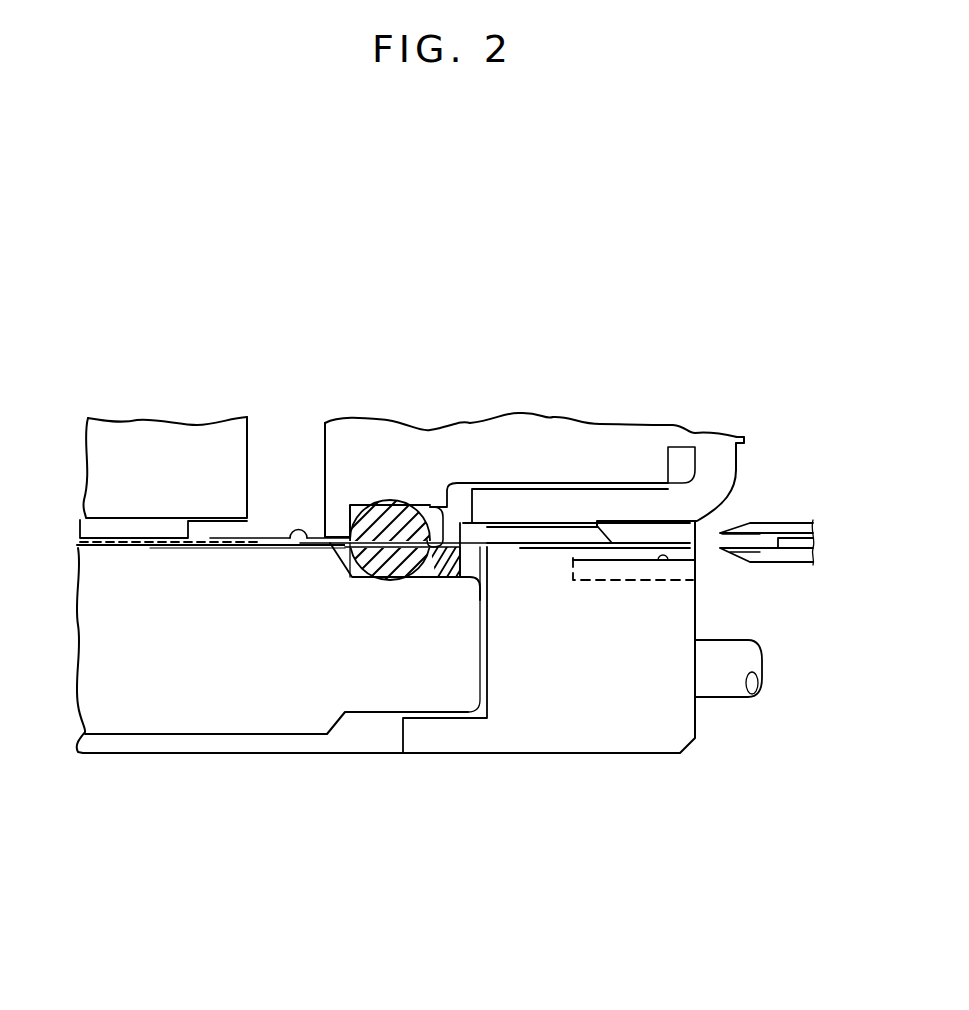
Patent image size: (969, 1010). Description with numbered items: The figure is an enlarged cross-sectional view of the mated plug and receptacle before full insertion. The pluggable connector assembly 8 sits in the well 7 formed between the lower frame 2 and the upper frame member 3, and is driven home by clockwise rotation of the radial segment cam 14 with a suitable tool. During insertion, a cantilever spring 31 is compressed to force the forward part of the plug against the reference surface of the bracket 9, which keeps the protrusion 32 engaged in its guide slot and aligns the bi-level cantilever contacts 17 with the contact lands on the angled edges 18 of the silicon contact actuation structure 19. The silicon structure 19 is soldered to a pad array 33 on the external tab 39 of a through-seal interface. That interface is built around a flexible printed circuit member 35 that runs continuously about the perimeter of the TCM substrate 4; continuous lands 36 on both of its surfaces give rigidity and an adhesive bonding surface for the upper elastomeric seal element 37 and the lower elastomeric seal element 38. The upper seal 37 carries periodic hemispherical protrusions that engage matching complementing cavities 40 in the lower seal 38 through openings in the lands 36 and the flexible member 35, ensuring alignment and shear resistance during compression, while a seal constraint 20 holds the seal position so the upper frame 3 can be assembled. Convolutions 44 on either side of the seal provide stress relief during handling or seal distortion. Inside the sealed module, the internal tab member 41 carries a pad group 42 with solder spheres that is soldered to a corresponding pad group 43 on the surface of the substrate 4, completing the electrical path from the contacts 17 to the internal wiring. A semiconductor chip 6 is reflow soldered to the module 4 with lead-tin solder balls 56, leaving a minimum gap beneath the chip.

The frame 2 is at (664, 758).
The upper frame member 3 is at (520, 414).
The TCM substrate 4 is at (181, 755).
The semiconductor chip 6 is at (112, 520).
The well 7 is at (697, 567).
The pluggable connector assembly 8 is at (795, 522).
The bracket 9 is at (743, 441).
The radial segment cam 14 is at (738, 702).
The bi-level cantilever contacts 17 is at (730, 552).
The angled edges 18 is at (630, 545).
The silicon contact actuation structure 19 is at (541, 522).
The seal constraint 20 is at (448, 492).
The cantilever spring 31 is at (675, 533).
The protrusion 32 is at (630, 545).
The pad array 33 is at (470, 578).
The flexible printed circuit member 35 is at (322, 530).
The continuous lands 36 is at (340, 580).
The upper elastomeric seal element 37 is at (433, 510).
The lower elastomeric seal element 38 is at (356, 578).
The external tab 39 is at (487, 546).
The complementing cavity 40 is at (373, 578).
The internal tab member 41 is at (270, 537).
The pad group 42 is at (249, 537).
The pad group 43 is at (262, 546).
The convolutions 44 is at (445, 578).
The solder balls 56 is at (403, 503).